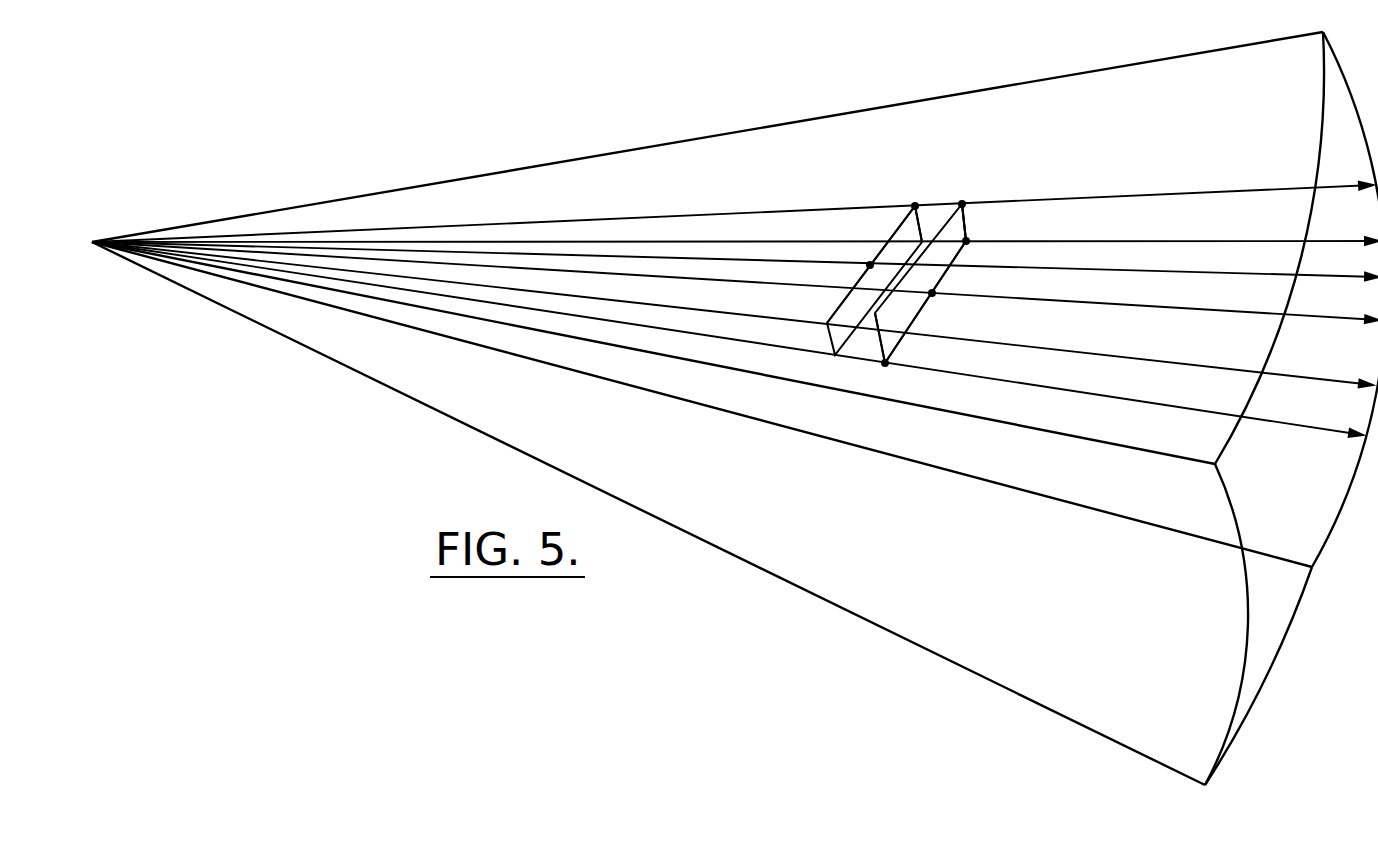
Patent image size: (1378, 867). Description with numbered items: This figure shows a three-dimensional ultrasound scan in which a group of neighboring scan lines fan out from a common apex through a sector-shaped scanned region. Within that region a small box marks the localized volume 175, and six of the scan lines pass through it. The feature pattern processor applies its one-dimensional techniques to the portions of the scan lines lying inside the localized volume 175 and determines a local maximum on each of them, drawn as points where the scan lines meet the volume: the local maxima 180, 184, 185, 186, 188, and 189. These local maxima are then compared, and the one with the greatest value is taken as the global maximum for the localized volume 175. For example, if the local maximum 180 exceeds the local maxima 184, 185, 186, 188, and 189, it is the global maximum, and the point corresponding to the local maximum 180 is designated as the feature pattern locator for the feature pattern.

The localized volume 175 is at (896, 238).
The local maximum 189 is at (887, 197).
The local maximum 188 is at (993, 189).
The local maximum 186 is at (853, 246).
The local maximum 180 is at (995, 224).
The local maximum 185 is at (942, 302).
The local maximum 184 is at (885, 363).